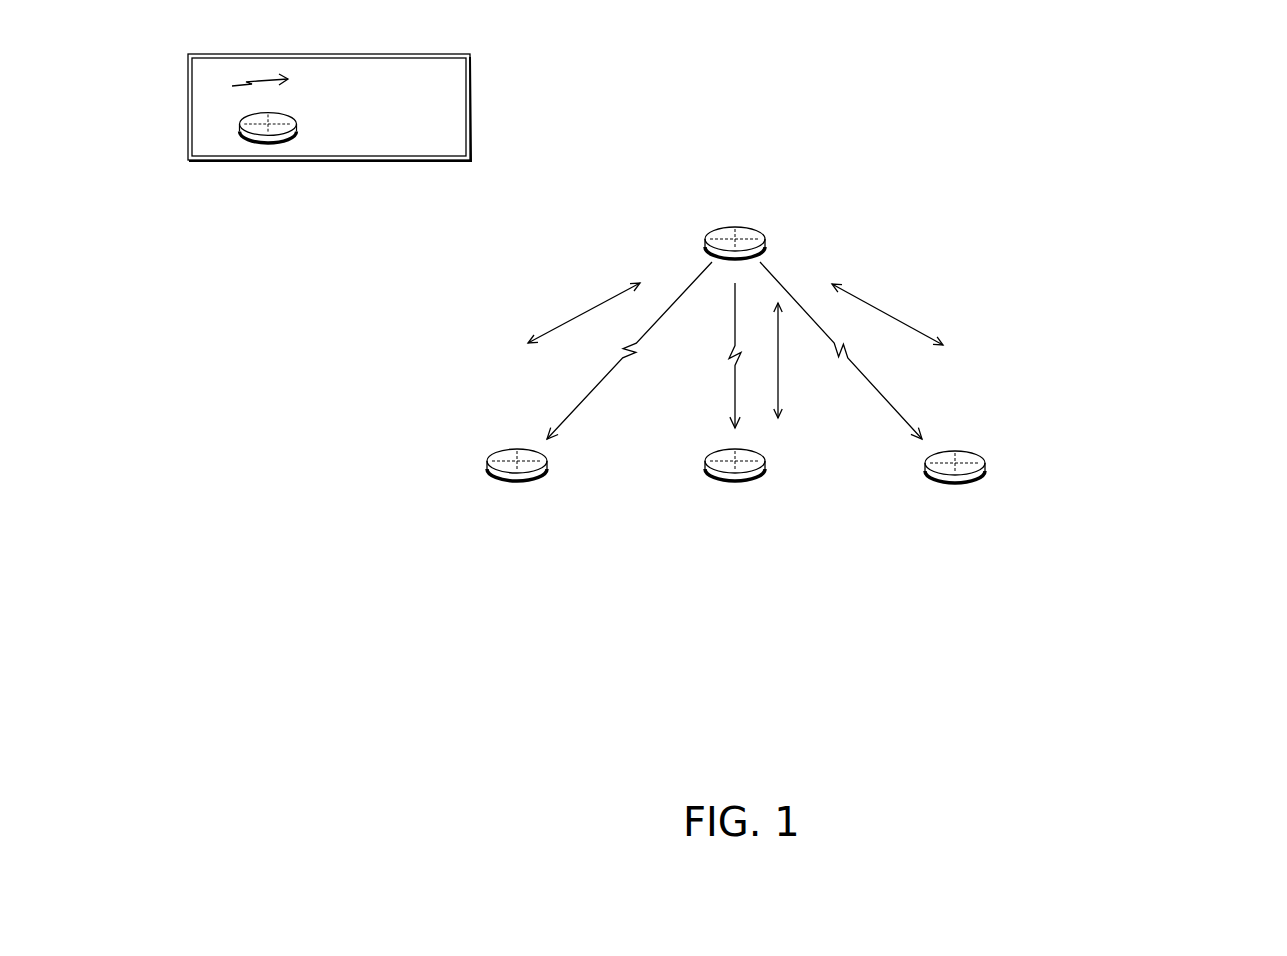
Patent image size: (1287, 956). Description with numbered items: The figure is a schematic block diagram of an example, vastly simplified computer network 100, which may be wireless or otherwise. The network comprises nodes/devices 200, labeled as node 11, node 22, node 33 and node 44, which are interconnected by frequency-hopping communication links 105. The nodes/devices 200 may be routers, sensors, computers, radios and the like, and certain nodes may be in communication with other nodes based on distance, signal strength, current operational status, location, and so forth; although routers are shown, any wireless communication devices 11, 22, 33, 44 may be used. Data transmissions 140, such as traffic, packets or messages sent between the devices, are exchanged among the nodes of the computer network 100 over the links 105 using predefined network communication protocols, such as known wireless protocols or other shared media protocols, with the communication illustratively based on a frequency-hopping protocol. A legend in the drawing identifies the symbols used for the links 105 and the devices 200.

The computer network 100 is at (1186, 104).
The frequency-hopping communication links 105 is at (577, 256).
The nodes/devices 200 is at (334, 128).
The node 11 is at (728, 231).
The node 22 is at (517, 483).
The node 33 is at (735, 483).
The node 44 is at (955, 484).
The data transmissions 140 is at (735, 350).